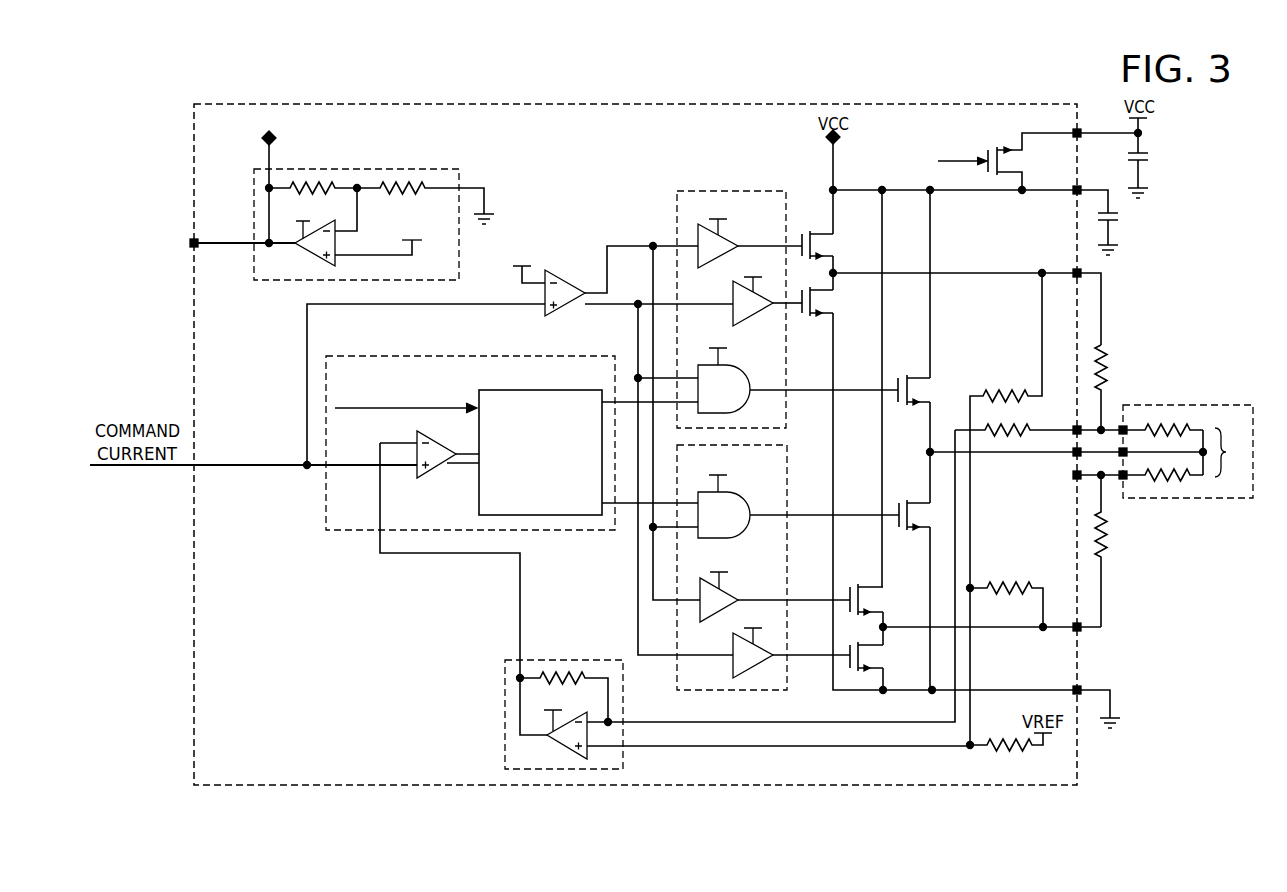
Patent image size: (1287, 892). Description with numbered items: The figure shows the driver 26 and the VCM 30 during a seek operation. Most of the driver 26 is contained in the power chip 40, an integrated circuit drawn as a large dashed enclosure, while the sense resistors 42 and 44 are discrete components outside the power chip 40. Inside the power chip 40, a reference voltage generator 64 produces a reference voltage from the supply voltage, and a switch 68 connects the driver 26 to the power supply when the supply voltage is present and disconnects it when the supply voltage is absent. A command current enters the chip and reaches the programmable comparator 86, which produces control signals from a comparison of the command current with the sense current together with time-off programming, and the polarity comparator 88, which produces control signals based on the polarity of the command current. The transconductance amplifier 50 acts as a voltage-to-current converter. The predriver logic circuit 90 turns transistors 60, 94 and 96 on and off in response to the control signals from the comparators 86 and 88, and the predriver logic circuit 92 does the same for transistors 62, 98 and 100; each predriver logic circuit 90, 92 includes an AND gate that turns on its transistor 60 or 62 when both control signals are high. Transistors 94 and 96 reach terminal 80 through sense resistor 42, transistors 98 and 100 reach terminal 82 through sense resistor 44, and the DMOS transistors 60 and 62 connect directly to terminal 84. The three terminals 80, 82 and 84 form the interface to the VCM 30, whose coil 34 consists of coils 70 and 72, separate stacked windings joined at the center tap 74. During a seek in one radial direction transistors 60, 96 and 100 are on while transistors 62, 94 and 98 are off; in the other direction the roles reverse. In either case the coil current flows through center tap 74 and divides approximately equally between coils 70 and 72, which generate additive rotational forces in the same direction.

The driver 26 is at (1112, 771).
The VCM 30 is at (1186, 451).
The coil 34 is at (1186, 452).
The power chip 40 is at (1003, 786).
The sense resistor 42 is at (1110, 368).
The sense resistor 44 is at (1110, 545).
The transconductance amplifier 50 is at (563, 660).
The transistor 60 is at (920, 378).
The transistor 62 is at (915, 529).
The reference voltage generator 64 is at (392, 169).
The switch 68 is at (1020, 142).
The coil 70 is at (1165, 425).
The coil 72 is at (1170, 479).
The center tap 74 is at (1208, 458).
The terminal 80 is at (1088, 428).
The terminal 82 is at (1088, 478).
The terminal 84 is at (1092, 453).
The programmable comparator 86 is at (418, 356).
The polarity comparator 88 is at (560, 314).
The predriver logic circuit 90 is at (703, 191).
The predriver logic circuit 92 is at (703, 690).
The transistor 94 is at (817, 234).
The transistor 96 is at (822, 315).
The transistor 98 is at (866, 587).
The transistor 100 is at (860, 671).